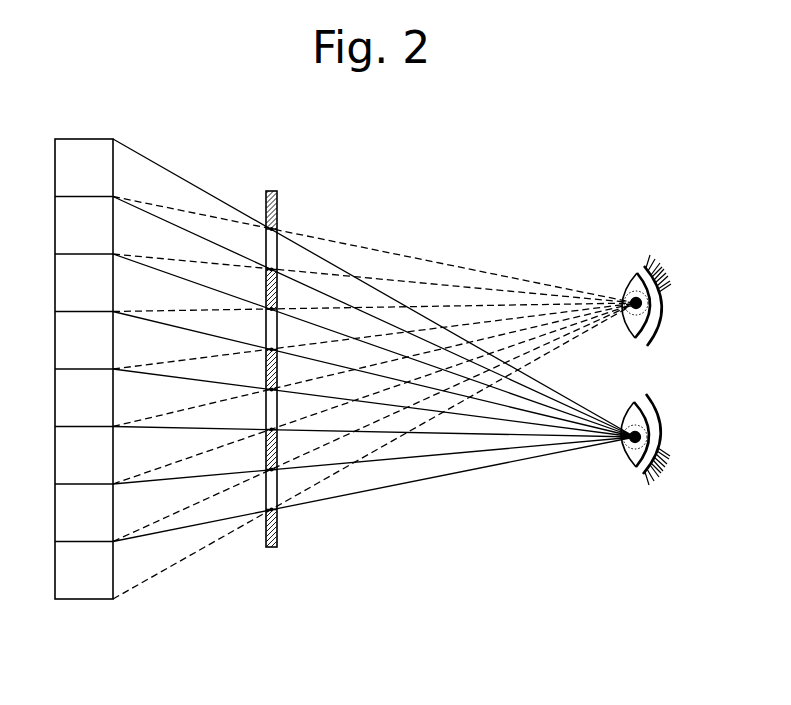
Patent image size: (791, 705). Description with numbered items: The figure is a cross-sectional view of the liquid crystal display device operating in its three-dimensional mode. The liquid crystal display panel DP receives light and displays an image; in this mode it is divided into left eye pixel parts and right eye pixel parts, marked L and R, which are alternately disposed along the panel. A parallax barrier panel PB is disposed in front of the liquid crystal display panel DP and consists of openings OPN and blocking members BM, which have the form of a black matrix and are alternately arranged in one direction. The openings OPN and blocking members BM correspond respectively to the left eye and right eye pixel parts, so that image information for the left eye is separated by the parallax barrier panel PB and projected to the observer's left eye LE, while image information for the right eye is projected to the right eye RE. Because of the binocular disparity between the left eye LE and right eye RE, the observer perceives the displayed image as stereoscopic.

The liquid crystal display panel DP is at (92, 601).
The parallax barrier panel PB is at (309, 405).
The blocking member BM is at (275, 212).
The opening OPN is at (273, 490).
The left eye LE is at (667, 302).
The right eye RE is at (666, 436).